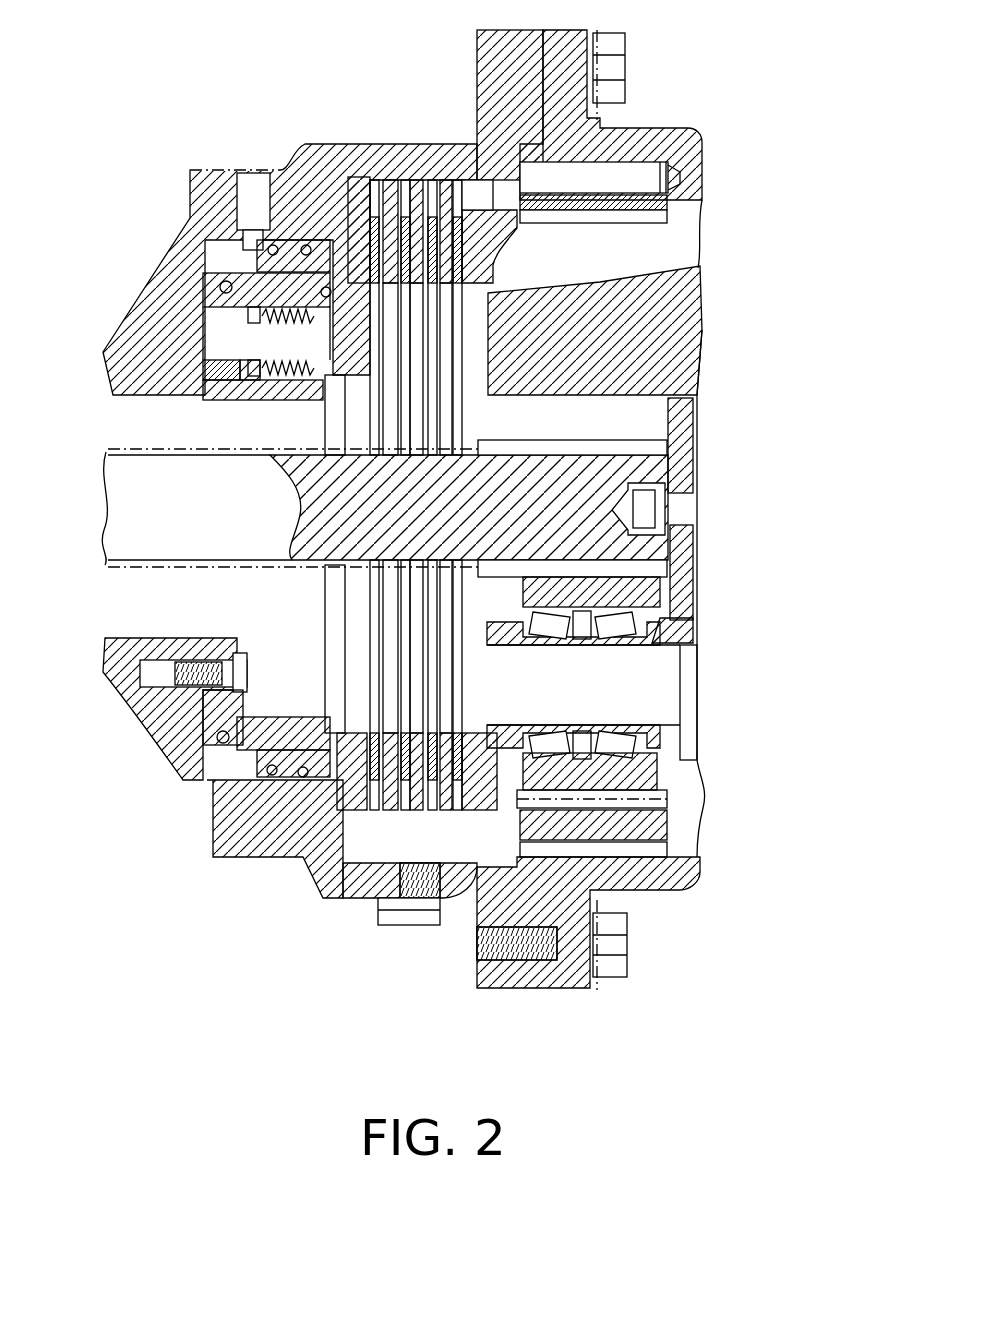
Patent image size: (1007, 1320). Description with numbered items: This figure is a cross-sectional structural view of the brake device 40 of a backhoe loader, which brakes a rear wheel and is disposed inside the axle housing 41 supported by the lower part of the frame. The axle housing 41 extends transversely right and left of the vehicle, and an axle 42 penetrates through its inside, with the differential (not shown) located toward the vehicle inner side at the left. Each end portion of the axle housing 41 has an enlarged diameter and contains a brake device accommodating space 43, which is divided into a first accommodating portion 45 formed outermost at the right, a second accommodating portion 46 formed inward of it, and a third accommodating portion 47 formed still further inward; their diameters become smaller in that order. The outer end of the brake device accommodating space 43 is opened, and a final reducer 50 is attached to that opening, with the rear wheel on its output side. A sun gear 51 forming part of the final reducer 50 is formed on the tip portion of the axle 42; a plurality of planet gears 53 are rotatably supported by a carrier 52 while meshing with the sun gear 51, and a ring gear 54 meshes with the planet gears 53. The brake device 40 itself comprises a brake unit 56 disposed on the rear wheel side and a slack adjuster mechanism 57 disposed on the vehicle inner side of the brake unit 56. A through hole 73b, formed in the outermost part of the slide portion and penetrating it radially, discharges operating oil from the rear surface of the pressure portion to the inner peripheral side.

The brake device 40 is at (473, 360).
The axle housing 41 is at (186, 198).
The axle 42 is at (148, 553).
The brake device accommodating space 43 is at (514, 268).
The first accommodating portion 45 is at (433, 813).
The second accommodating portion 46 is at (297, 818).
The third accommodating portion 47 is at (183, 775).
The final reducer 50 is at (710, 766).
The sun gear 51 is at (620, 434).
The carrier 52 is at (681, 637).
The planet gear 53 is at (633, 593).
The ring gear 54 is at (655, 818).
The brake unit 56 is at (465, 190).
The slack adjuster mechanism 57 is at (224, 412).
The through hole 73b is at (337, 727).